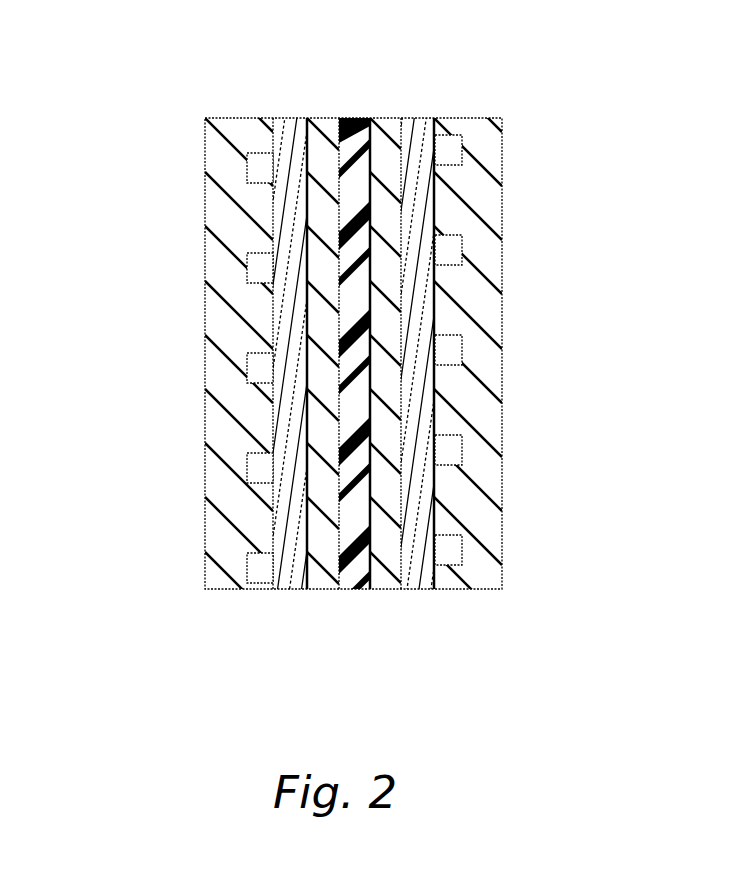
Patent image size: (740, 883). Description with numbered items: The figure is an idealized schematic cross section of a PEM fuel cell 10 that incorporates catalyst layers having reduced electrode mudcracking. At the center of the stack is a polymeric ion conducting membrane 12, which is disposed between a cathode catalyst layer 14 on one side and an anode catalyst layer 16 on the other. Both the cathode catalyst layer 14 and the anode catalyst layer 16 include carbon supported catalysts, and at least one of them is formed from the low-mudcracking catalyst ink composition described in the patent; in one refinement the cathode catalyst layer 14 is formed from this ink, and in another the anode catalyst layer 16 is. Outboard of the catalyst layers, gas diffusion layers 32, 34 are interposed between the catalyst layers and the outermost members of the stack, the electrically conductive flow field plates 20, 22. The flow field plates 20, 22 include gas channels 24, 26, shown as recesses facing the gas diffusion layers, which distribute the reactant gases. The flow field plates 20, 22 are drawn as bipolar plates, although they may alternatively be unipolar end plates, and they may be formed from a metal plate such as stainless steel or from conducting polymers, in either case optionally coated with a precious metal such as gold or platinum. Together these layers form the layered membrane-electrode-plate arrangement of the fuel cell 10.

The PEM fuel cell 10 is at (134, 121).
The polymeric ion conducting membrane 12 is at (360, 118).
The cathode catalyst layer 14 is at (327, 120).
The anode catalyst layer 16 is at (380, 118).
The flow field plate 20 is at (460, 118).
The flow field plate 22 is at (240, 122).
The gas channels 24 is at (448, 152).
The gas channels 26 is at (258, 263).
The gas diffusion layer 32 is at (418, 118).
The gas diffusion layer 34 is at (297, 120).